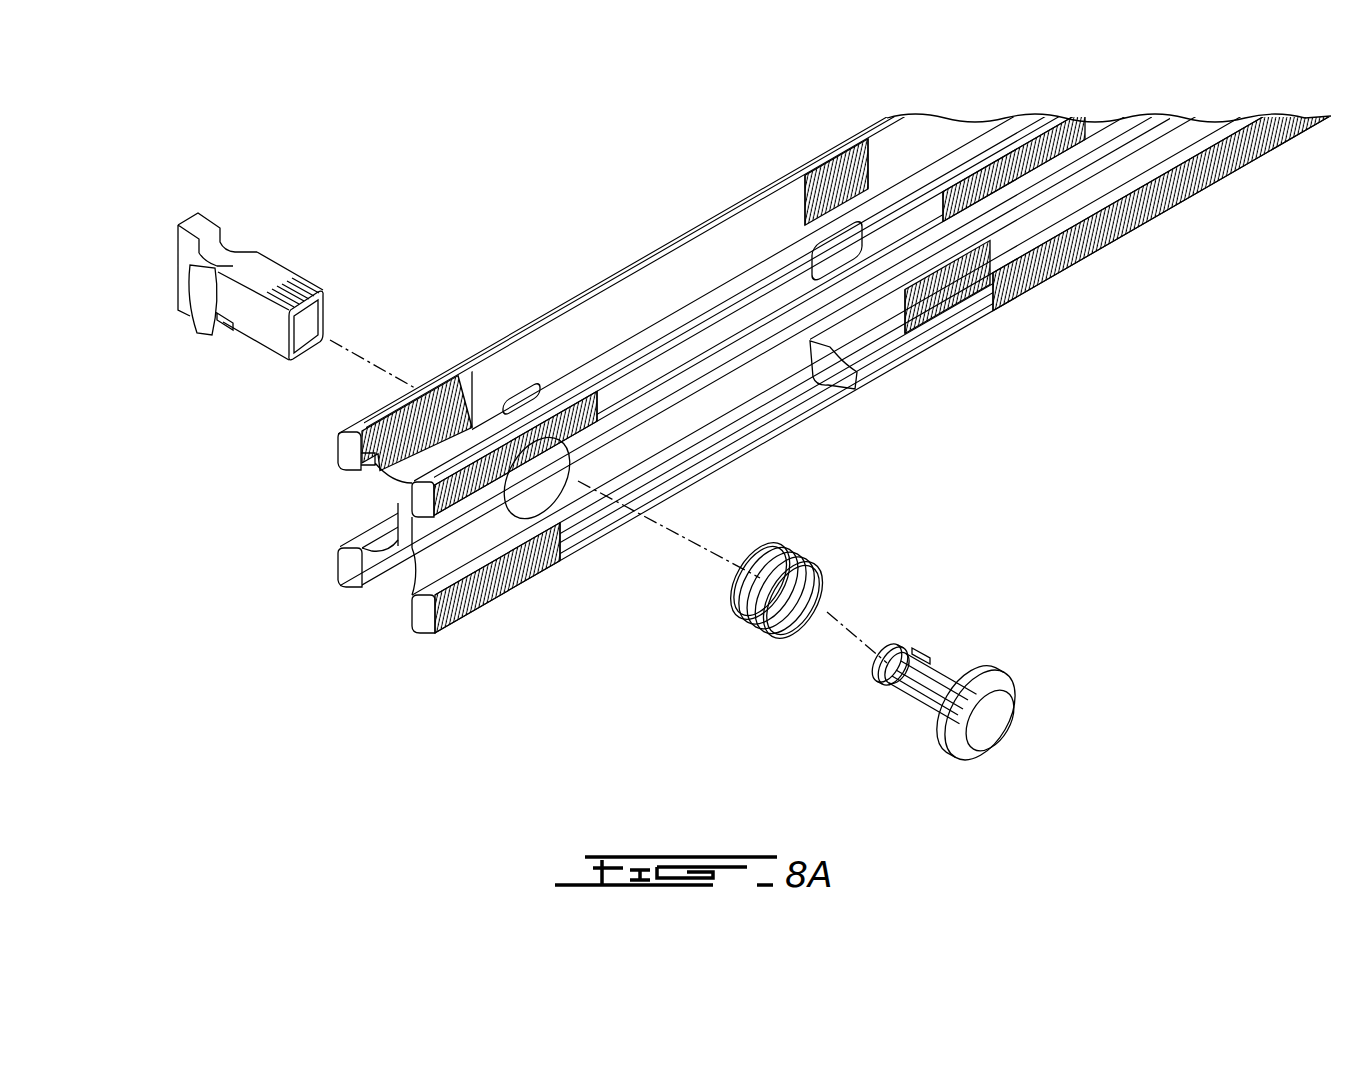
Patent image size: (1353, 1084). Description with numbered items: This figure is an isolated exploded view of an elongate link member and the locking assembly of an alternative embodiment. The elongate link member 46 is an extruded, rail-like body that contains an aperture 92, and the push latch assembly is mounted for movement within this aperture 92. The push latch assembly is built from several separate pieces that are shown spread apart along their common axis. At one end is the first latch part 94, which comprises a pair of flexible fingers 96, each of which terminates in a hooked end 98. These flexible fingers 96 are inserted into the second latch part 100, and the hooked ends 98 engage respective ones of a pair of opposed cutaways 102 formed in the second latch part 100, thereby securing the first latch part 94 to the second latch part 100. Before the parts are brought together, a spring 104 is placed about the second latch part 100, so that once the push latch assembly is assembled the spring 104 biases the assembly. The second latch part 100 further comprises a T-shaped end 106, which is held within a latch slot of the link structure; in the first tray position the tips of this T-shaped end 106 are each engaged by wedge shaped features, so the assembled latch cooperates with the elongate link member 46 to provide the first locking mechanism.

The elongate link member 46 is at (651, 293).
The aperture 92 is at (563, 498).
The first latch part 94 is at (945, 682).
The flexible fingers 96 is at (925, 715).
The hooked end 98 is at (904, 684).
The second latch part 100 is at (302, 284).
The opposed cutaways 102 is at (208, 330).
The spring 104 is at (812, 570).
The T-shaped end 106 is at (178, 240).